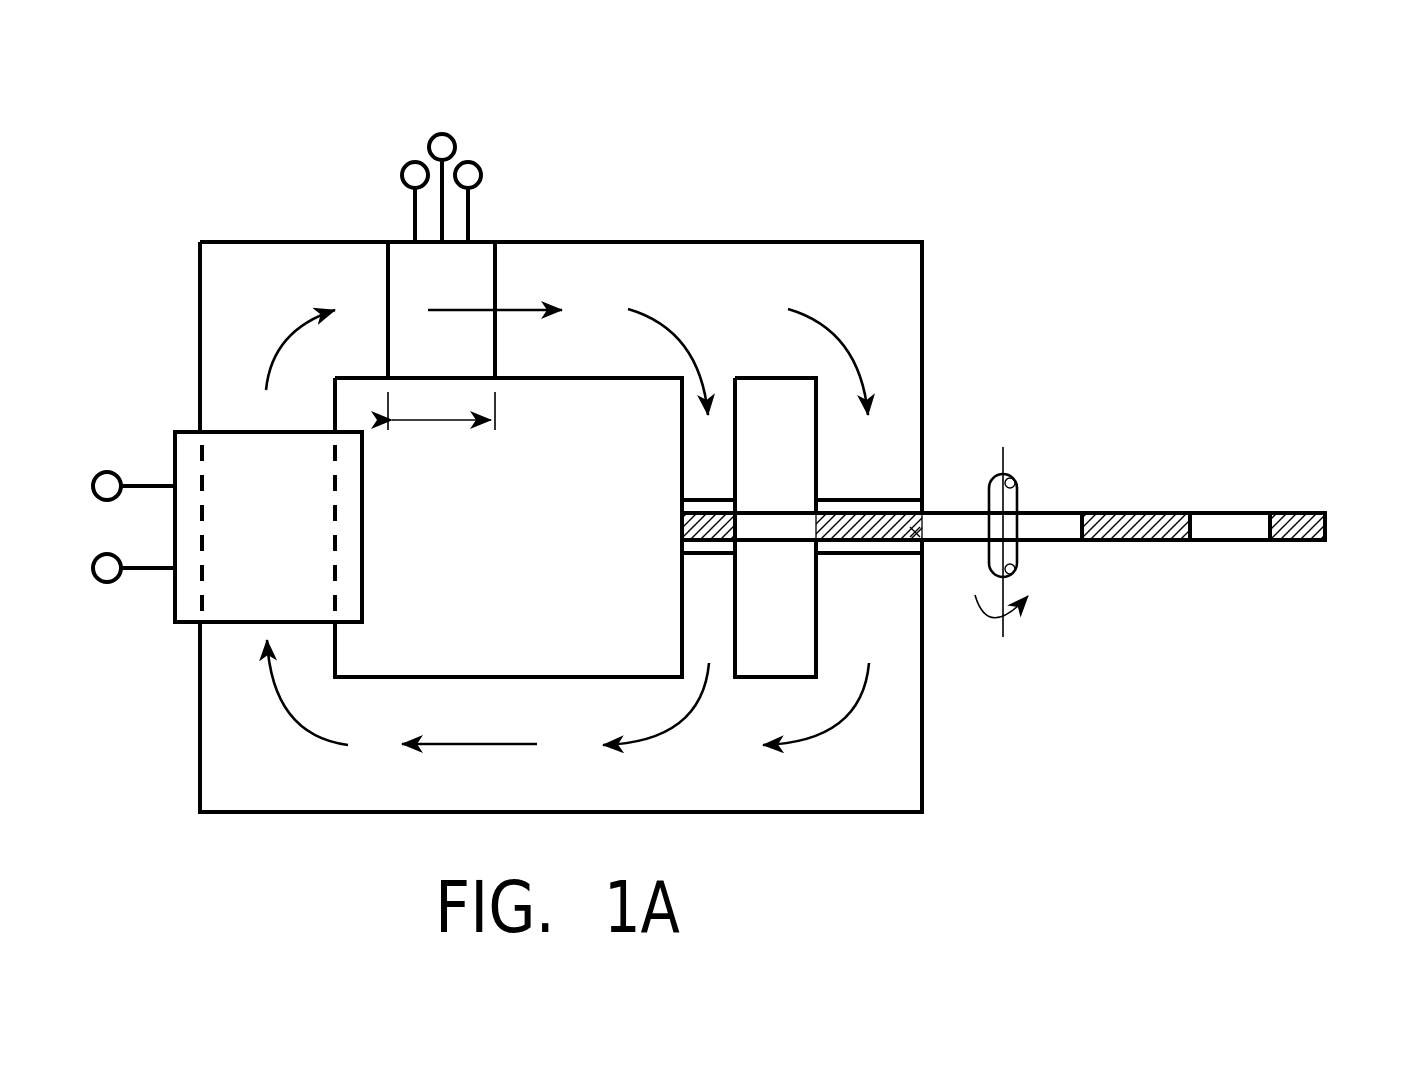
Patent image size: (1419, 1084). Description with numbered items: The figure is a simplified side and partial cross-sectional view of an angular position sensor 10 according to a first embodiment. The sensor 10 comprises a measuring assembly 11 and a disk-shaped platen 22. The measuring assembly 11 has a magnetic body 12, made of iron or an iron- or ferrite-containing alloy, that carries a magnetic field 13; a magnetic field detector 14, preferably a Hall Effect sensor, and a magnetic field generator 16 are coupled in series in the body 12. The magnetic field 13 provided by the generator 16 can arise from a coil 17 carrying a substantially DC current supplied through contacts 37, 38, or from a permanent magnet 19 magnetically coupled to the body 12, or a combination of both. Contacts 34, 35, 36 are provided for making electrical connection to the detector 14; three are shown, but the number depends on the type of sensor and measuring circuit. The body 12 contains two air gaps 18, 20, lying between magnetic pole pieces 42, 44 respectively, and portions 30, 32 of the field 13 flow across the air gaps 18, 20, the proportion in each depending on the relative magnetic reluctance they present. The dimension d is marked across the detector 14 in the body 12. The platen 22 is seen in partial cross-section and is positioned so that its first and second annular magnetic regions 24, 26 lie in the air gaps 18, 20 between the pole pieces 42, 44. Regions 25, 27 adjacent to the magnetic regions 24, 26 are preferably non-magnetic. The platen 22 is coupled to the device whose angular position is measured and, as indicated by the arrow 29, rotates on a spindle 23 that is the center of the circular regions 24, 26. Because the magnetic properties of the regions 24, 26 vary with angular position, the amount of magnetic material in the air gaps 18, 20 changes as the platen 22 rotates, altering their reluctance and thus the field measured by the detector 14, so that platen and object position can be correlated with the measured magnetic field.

The angular position sensor 10 is at (1095, 740).
The measuring assembly 11 is at (655, 198).
The magnetic body 12 is at (271, 768).
The magnetic field 13 is at (462, 307).
The magnetic field detector 14 is at (429, 373).
The magnetic field generator 16 is at (278, 601).
The coil 17 is at (365, 553).
The air gap 18 is at (690, 507).
The permanent magnet 19 is at (278, 494).
The air gap 20 is at (913, 507).
The disk-shaped platen 22 is at (1328, 527).
The spindle 23 is at (1018, 500).
The first annular magnetic region 24 is at (685, 524).
The non-magnetic region 25 is at (777, 527).
The second annular magnetic region 26 is at (1148, 520).
The non-magnetic region 27 is at (1053, 523).
The arrow 29 is at (1028, 612).
The portion of magnetic field 30 is at (690, 337).
The portion of magnetic field 32 is at (856, 337).
The contact 34 is at (402, 176).
The contact 35 is at (442, 134).
The contact 36 is at (481, 176).
The contact 37 is at (96, 476).
The contact 38 is at (98, 579).
The magnetic pole pieces 42 is at (712, 497).
The magnetic pole pieces 44 is at (856, 497).
The width dimension d is at (425, 422).